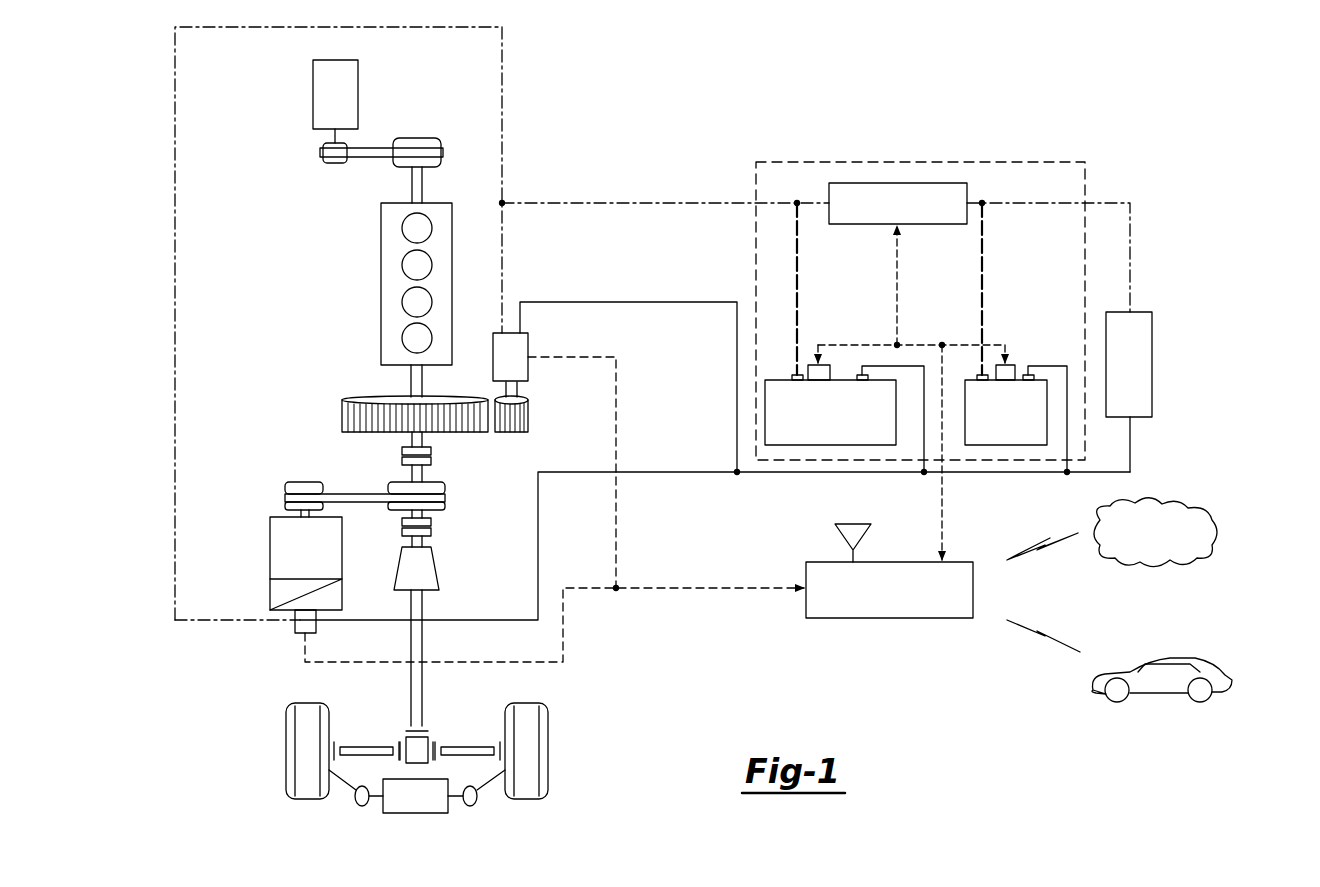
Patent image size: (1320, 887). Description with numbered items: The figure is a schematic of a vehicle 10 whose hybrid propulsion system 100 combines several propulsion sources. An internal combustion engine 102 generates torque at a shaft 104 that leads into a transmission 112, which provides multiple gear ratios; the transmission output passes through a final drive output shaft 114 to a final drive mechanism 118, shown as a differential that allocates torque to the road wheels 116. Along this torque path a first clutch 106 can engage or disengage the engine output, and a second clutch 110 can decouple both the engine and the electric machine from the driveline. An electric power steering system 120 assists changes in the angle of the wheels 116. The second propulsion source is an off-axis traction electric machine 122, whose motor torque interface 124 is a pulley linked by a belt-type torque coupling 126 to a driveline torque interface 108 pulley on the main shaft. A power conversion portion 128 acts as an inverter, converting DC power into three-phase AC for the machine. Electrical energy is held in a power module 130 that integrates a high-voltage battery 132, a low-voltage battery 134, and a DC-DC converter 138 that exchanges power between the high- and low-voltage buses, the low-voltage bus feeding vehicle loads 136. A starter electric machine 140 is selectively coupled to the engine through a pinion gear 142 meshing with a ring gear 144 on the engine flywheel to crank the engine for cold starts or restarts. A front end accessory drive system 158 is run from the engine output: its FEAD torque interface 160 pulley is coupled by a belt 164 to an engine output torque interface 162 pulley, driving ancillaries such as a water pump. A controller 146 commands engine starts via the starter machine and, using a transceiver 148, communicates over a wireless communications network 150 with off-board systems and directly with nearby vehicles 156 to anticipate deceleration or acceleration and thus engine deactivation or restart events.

The vehicle 10 is at (890, 84).
The propulsion system 100 is at (280, 288).
The internal combustion engine 102 is at (382, 245).
The shaft 104 is at (410, 382).
The first clutch 106 is at (402, 459).
The driveline torque interface 108 is at (446, 495).
The second clutch 110 is at (432, 531).
The transmission 112 is at (440, 568).
The final drive output shaft 114 is at (425, 673).
The road wheels 116 is at (286, 751).
The final drive mechanism 118 is at (410, 745).
The electric power steering system 120 is at (395, 814).
The traction electric machine 122 is at (318, 557).
The motor torque interface 124 is at (285, 490).
The torque coupling 126 is at (365, 503).
The power conversion portion 128 is at (270, 592).
The power module 130 is at (1013, 160).
The high-voltage battery 132 is at (842, 430).
The low-voltage battery 134 is at (1017, 430).
The vehicle loads 136 is at (1141, 377).
The DC-DC converter 138 is at (910, 217).
The starter electric machine 140 is at (523, 366).
The pinion gear 142 is at (529, 412).
The ring gear 144 is at (460, 433).
The controller 146 is at (901, 602).
The transceiver 148 is at (838, 535).
The wireless communications network 150 is at (1192, 507).
The vehicles 156 is at (1230, 681).
The front end accessory drive system 158 is at (348, 107).
The FEAD torque interface 160 is at (335, 163).
The engine output torque interface 162 is at (419, 137).
The belt 164 is at (380, 147).